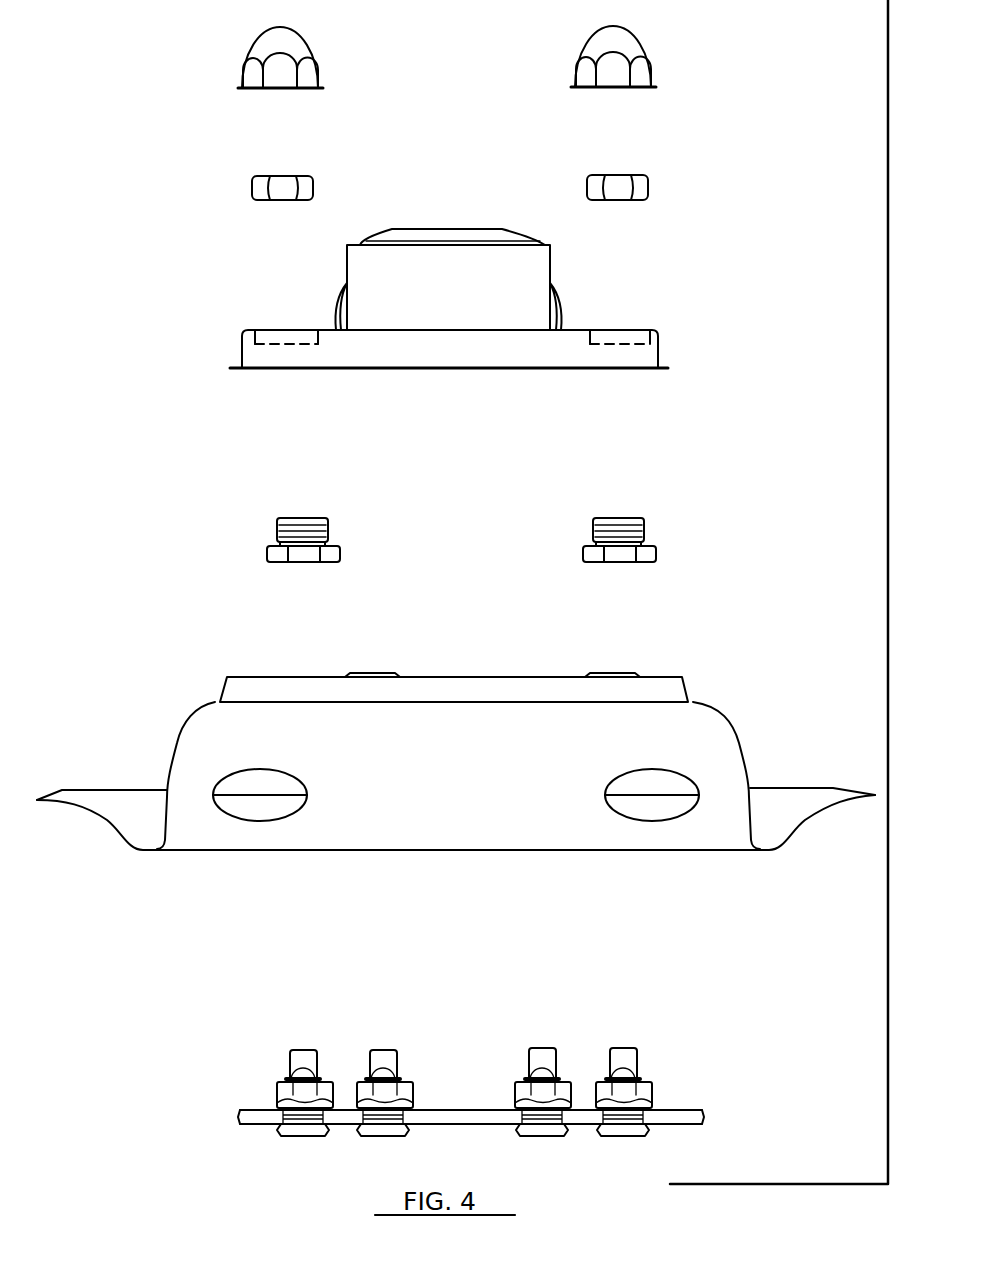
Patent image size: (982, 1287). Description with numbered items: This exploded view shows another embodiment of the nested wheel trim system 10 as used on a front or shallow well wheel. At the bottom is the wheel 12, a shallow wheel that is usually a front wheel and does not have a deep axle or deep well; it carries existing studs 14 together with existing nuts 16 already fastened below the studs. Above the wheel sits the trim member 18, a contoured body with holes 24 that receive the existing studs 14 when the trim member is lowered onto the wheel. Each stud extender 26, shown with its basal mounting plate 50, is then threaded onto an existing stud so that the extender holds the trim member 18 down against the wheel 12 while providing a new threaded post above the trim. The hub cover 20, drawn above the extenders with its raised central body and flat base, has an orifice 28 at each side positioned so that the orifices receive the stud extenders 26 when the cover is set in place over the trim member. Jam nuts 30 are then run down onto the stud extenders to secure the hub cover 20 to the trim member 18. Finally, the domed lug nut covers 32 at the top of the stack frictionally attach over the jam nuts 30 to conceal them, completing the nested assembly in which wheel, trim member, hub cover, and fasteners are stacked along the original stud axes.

The nested wheel trim system 10 is at (180, 125).
The wheel 12 is at (684, 1108).
The existing studs 14 is at (620, 1047).
The nuts 16 is at (652, 1082).
The trim member 18 is at (740, 752).
The hub cover 20 is at (551, 276).
The holes 24 is at (617, 672).
The stud extender 26 is at (630, 520).
The orifice 28 is at (625, 342).
The jam nuts 30 is at (297, 176).
The lug nut covers 32 is at (305, 42).
The basal mounting plate 50 is at (656, 558).